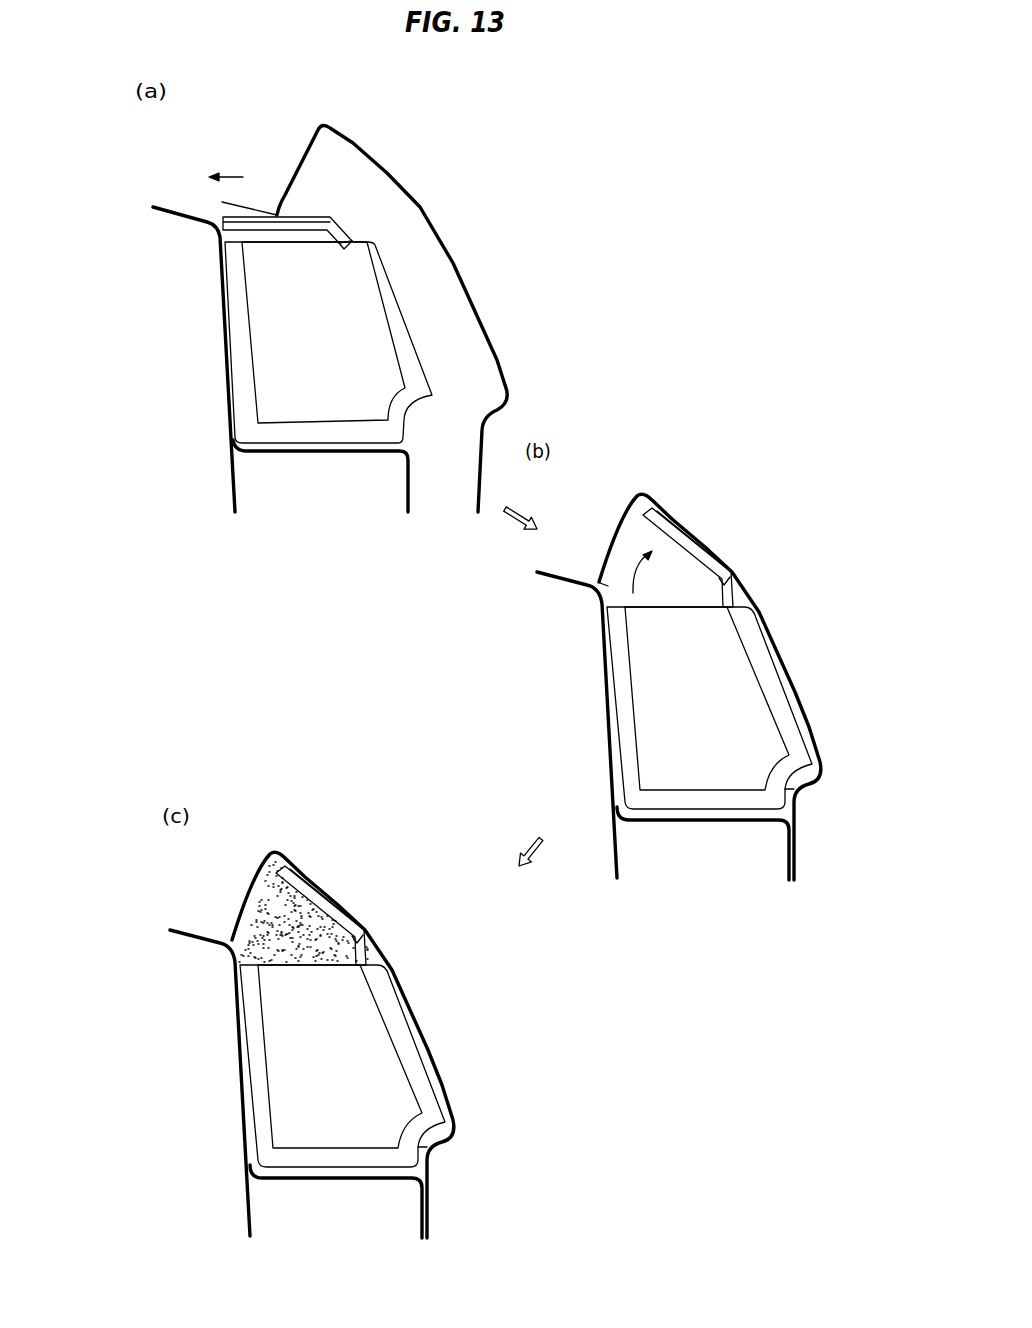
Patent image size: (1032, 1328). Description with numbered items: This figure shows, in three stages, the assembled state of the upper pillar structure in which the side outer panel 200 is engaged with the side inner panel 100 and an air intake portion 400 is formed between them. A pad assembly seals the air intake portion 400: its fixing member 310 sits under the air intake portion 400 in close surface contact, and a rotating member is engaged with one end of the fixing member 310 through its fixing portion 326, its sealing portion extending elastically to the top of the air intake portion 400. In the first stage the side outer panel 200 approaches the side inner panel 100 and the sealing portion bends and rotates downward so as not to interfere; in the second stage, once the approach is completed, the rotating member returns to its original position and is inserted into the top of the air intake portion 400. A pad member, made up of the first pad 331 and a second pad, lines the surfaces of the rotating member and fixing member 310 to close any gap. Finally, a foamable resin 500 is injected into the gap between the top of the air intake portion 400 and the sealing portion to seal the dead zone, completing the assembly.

The side inner panel 100 is at (222, 320).
The side outer panel 200 is at (456, 262).
The fixing member 310 is at (275, 354).
The fixing portion 326 is at (343, 246).
The first pad 331 is at (232, 278).
The air intake portion 400 is at (610, 583).
The foamable resin 500 is at (293, 940).